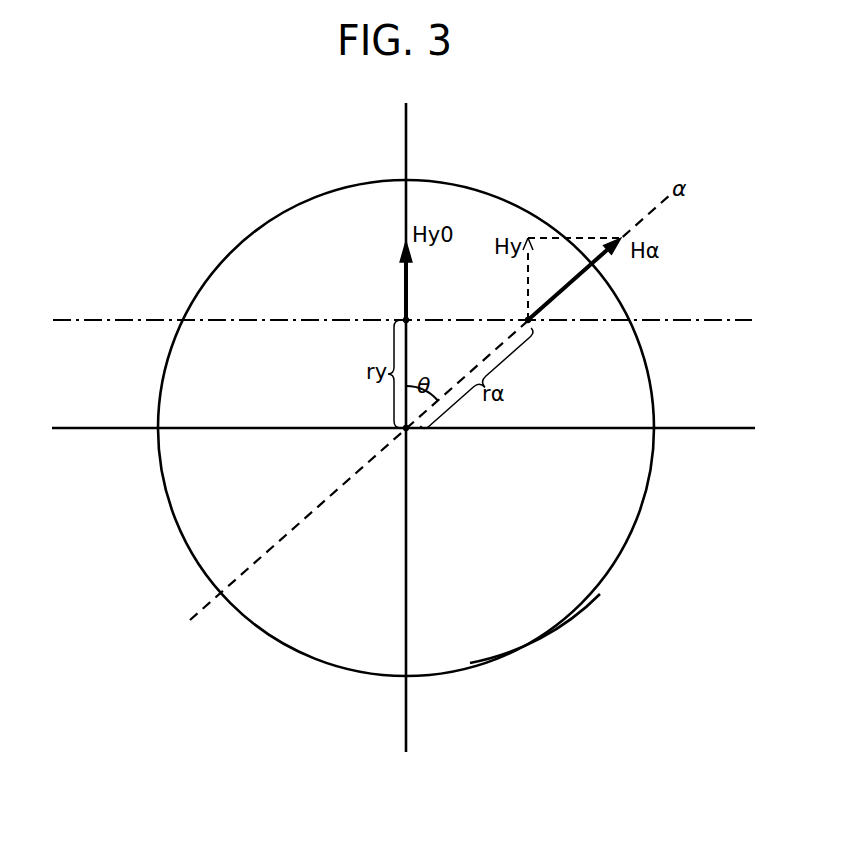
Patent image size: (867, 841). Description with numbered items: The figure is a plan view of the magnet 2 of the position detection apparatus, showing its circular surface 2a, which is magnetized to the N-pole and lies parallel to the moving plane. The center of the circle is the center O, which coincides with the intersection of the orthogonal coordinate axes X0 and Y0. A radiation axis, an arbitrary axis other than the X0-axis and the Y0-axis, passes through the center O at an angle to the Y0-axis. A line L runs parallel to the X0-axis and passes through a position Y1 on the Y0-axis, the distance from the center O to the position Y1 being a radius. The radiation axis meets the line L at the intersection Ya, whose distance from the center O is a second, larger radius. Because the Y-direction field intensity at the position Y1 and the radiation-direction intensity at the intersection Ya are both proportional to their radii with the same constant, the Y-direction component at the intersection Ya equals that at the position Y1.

The magnet 2 is at (612, 577).
The surface 2a is at (530, 613).
The line L is at (413, 321).
The center O is at (409, 431).
The position Y1 is at (403, 319).
The intersection Ya is at (530, 323).
The X0-axis X0 is at (420, 429).
The Y0-axis Y0 is at (405, 430).